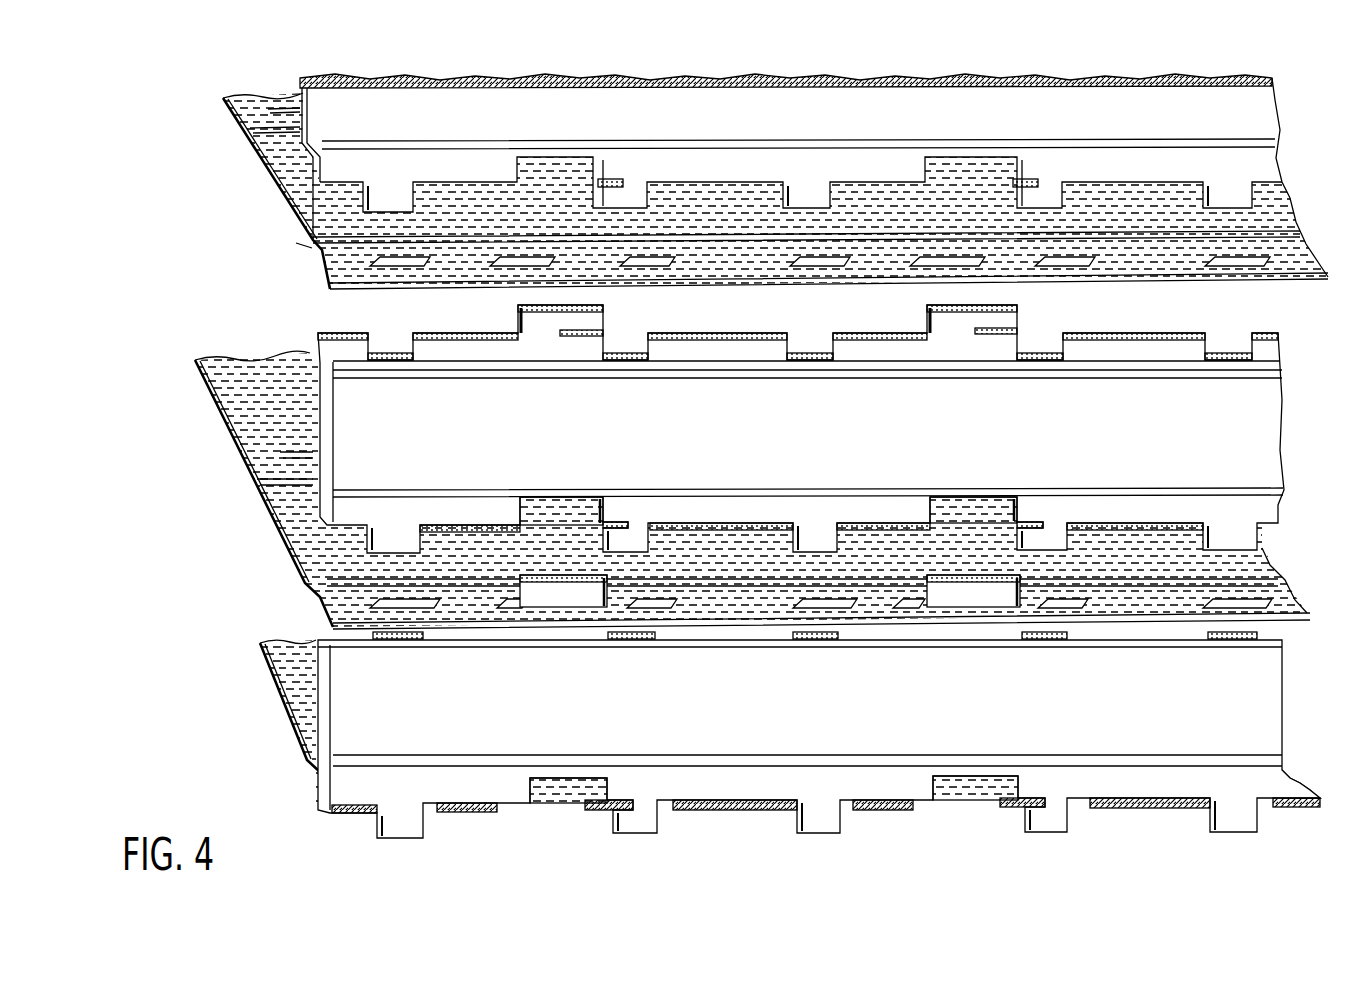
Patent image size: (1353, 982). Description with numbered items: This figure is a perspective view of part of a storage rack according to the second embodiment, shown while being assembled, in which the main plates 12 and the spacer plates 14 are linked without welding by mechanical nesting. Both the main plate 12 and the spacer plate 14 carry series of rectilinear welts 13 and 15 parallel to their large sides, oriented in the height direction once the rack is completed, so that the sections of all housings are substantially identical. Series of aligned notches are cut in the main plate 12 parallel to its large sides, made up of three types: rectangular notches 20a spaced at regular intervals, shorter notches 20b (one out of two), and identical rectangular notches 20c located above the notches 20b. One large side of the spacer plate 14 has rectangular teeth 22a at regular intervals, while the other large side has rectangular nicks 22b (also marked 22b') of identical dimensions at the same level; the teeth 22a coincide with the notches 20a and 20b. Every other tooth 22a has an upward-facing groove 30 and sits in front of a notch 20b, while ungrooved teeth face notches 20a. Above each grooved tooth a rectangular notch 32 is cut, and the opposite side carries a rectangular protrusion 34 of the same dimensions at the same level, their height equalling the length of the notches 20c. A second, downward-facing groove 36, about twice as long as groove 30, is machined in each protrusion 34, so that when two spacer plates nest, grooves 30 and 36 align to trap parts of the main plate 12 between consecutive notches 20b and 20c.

The main plate 12 is at (238, 147).
The rectilinear welt 13 is at (308, 248).
The spacer plate 14 is at (1294, 393).
The rectilinear welt 15 is at (477, 368).
The notch 20a is at (392, 262).
The notch 20b is at (650, 262).
The notch 20c is at (510, 262).
The tooth 22a is at (403, 540).
The nick 22b is at (764, 323).
The mounting tab 22b' is at (764, 323).
The groove 30 is at (620, 525).
The rectangular notch 32 is at (562, 512).
The rectangular protrusion 34 is at (533, 332).
The second groove 36 is at (1018, 330).